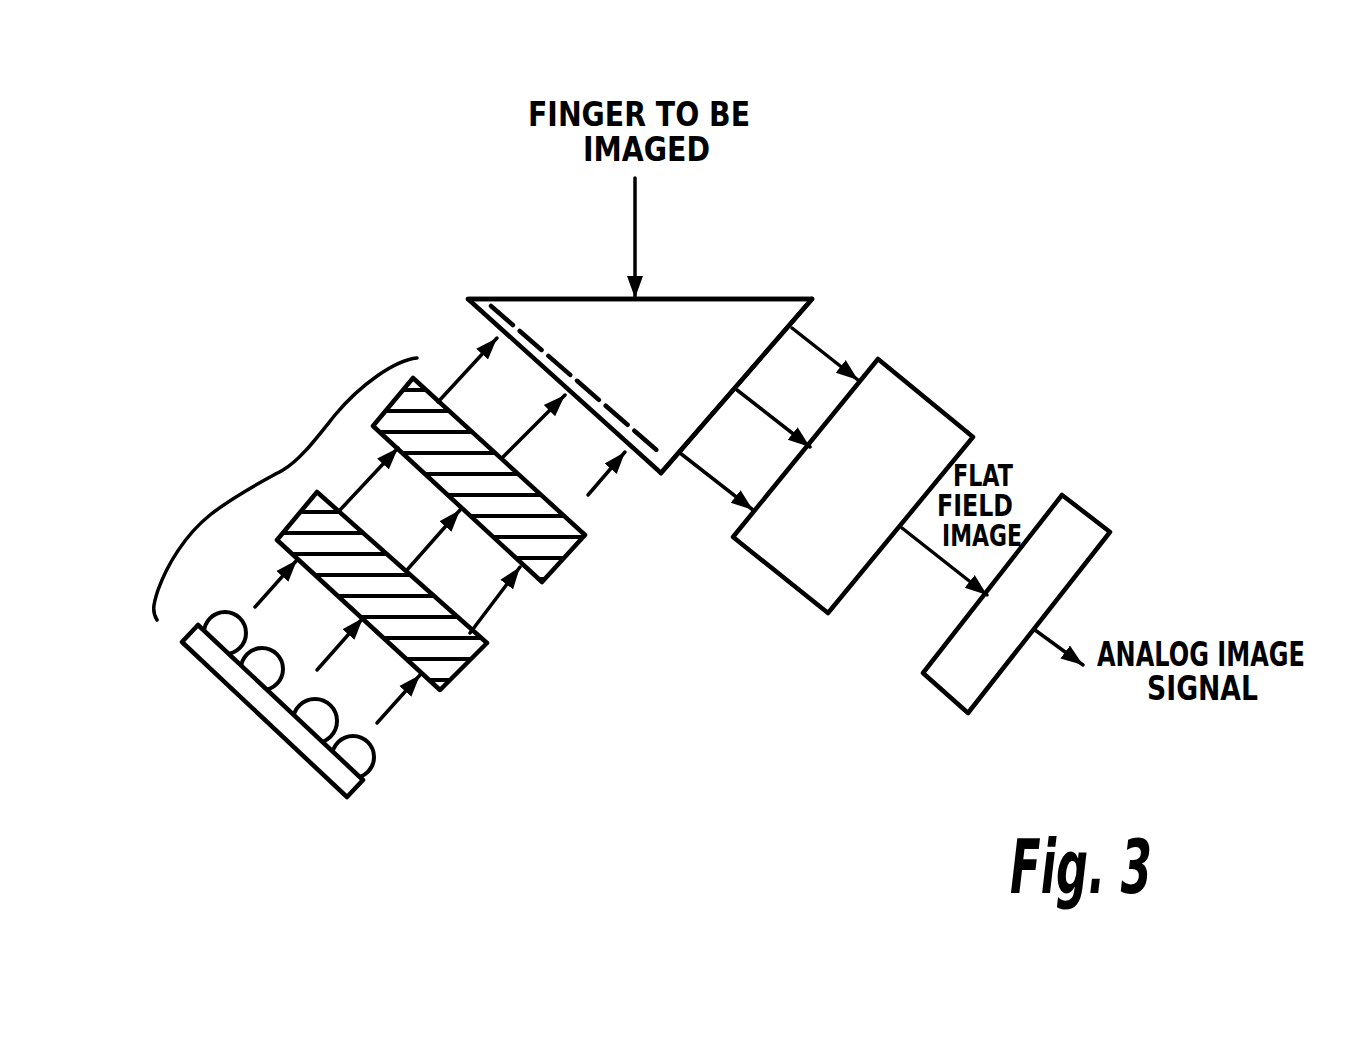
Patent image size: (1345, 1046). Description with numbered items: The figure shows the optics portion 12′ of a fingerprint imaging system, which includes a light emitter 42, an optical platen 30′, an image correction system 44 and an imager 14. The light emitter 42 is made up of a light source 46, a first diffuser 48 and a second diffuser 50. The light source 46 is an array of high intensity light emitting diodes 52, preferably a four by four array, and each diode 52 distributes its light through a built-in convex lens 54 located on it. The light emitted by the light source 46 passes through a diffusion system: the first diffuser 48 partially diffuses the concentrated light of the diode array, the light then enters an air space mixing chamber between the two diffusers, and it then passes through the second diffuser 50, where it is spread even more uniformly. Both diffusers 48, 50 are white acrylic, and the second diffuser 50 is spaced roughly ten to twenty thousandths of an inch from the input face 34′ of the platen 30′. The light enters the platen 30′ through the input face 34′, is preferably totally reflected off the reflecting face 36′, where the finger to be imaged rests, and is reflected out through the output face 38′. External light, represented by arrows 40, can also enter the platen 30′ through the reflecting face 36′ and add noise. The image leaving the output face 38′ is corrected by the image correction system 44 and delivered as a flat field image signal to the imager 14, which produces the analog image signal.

The optics portion 12′ is at (862, 146).
The imager 14 is at (947, 697).
The optical platen 30′ is at (783, 292).
The input face 34′ is at (642, 463).
The reflecting face 36′ is at (597, 299).
The output face 38′ is at (798, 313).
The external light 40 is at (727, 272).
The light emitter 42 is at (285, 489).
The image correction system 44 is at (927, 395).
The light source 46 is at (353, 797).
The first diffuser 48 is at (463, 670).
The second diffuser 50 is at (548, 586).
The light emitting diodes 52 is at (228, 614).
The convex lens 54 is at (200, 612).